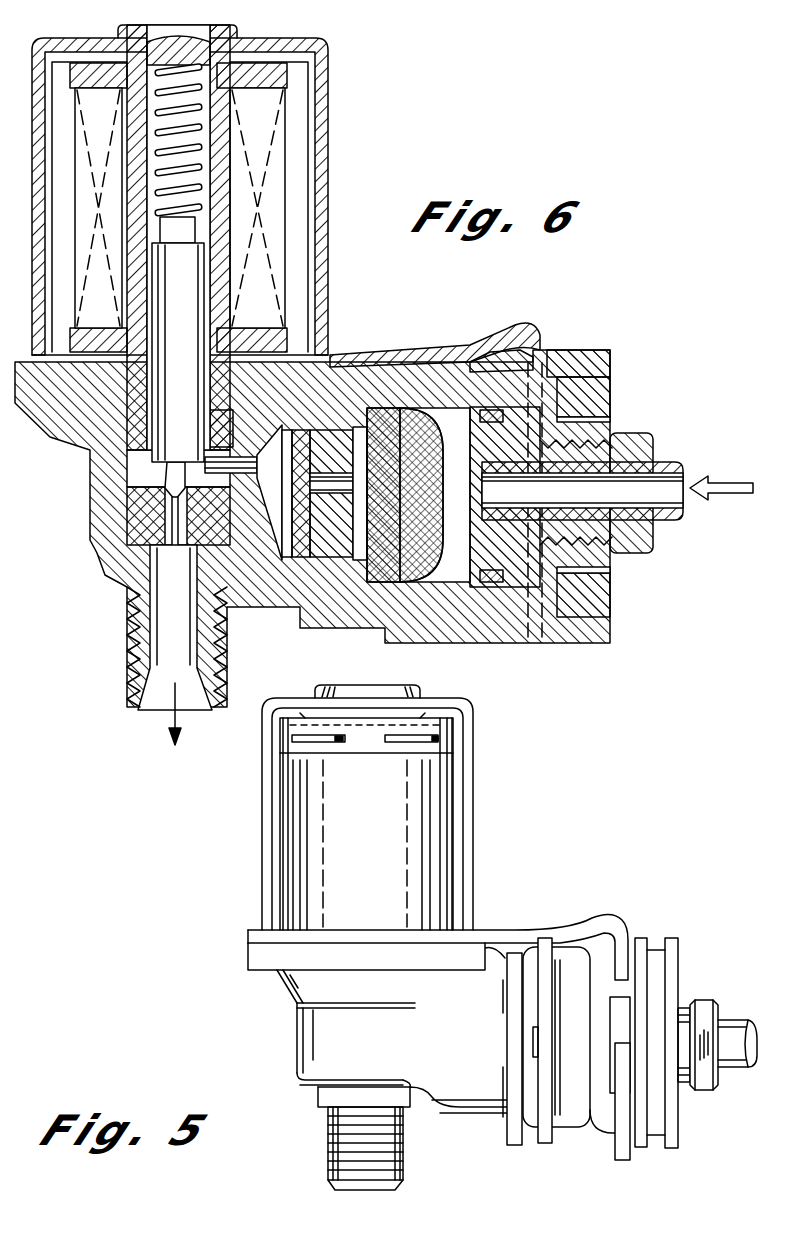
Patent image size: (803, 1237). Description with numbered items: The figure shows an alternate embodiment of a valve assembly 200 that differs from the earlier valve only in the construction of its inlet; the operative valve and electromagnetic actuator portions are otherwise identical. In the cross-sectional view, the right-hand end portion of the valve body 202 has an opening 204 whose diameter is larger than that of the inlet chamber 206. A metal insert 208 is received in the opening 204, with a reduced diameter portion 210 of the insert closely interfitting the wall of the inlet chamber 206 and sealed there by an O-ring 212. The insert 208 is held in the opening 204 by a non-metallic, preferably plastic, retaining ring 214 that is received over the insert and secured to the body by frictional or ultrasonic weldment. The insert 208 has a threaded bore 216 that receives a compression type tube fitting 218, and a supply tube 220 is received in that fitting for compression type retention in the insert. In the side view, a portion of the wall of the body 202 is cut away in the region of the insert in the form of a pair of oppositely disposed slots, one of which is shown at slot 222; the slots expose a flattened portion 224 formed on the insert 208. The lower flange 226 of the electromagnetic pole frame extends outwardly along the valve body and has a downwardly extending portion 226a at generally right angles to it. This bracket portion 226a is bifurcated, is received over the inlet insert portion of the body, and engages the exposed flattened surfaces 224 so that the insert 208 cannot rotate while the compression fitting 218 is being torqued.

In FIG. 6, the valve assembly 200 is at (384, 385).
In FIG. 5, the valve assembly 200 is at (502, 937).
In FIG. 6, the valve body 202 is at (300, 613).
In FIG. 5, the valve body 202 is at (465, 1110).
In FIG. 6, the opening 204 is at (600, 390).
In FIG. 6, the inlet chamber 206 is at (470, 573).
In FIG. 6, the metal insert 208 is at (457, 442).
In FIG. 6, the reduced diameter portion 210 is at (517, 593).
In FIG. 6, the O-ring 212 is at (487, 378).
In FIG. 6, the retaining ring 214 is at (613, 397).
In FIG. 6, the threaded bore 216 is at (613, 443).
In FIG. 6, the compression type tube fitting 218 is at (650, 543).
In FIG. 5, the compression type tube fitting 218 is at (712, 1003).
In FIG. 6, the supply tube 220 is at (667, 462).
In FIG. 5, the supply tube 220 is at (748, 1070).
In FIG. 5, the slot 222 is at (613, 1010).
In FIG. 5, the flattened portion 224 is at (623, 1027).
In FIG. 6, the lower flange 226 is at (333, 352).
In FIG. 5, the lower flange 226 is at (490, 930).
In FIG. 5, the downwardly extending portion 226a is at (600, 1130).